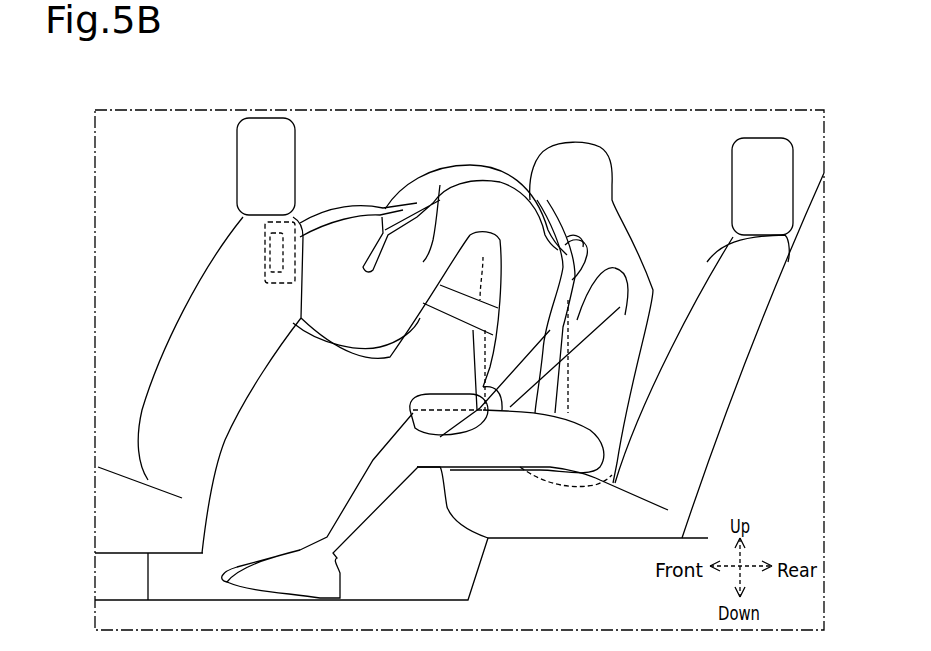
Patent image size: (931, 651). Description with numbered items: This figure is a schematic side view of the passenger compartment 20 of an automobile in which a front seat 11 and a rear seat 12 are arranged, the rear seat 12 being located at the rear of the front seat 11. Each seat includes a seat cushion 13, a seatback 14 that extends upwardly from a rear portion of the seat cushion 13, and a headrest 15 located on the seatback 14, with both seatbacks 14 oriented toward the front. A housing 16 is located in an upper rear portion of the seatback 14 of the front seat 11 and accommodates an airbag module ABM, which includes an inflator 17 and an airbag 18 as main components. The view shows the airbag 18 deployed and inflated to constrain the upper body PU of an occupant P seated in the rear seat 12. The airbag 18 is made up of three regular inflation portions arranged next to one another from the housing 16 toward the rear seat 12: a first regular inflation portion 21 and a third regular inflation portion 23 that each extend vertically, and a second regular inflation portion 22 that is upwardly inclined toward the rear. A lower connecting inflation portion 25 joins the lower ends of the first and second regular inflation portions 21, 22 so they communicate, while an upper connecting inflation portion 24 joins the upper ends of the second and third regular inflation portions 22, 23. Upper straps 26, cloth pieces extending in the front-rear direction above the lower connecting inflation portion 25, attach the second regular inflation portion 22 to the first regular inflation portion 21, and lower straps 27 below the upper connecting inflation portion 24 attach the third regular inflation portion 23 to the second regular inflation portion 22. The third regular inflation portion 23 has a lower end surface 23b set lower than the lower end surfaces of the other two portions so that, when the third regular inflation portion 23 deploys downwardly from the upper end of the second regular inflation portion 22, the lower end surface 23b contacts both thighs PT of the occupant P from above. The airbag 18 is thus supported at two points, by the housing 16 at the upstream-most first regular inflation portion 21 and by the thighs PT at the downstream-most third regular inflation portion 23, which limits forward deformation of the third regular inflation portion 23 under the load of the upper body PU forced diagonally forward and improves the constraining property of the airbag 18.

The passenger compartment 20 is at (158, 149).
The seat cushion 13 is at (97, 506).
The front seat 11 is at (481, 311).
The rear seat 12 is at (542, 488).
The seatback 14 is at (237, 393).
The headrest 15 is at (265, 117).
The housing 16 is at (287, 280).
The inflator 17 is at (267, 252).
The airbag module ABM is at (230, 265).
The airbag 18 is at (462, 300).
The first regular inflation portion 21 is at (347, 213).
The second regular inflation portion 22 is at (440, 185).
The upper connecting inflation portion 24 is at (485, 187).
The lower connecting inflation portion 25 is at (328, 328).
The upper strap 26 is at (400, 208).
The lower strap 27 is at (467, 315).
The third regular inflation portion 23 is at (522, 343).
The lower end surface 23b is at (520, 417).
The occupant P is at (657, 288).
The upper body PU is at (568, 298).
The thighs PT is at (487, 388).